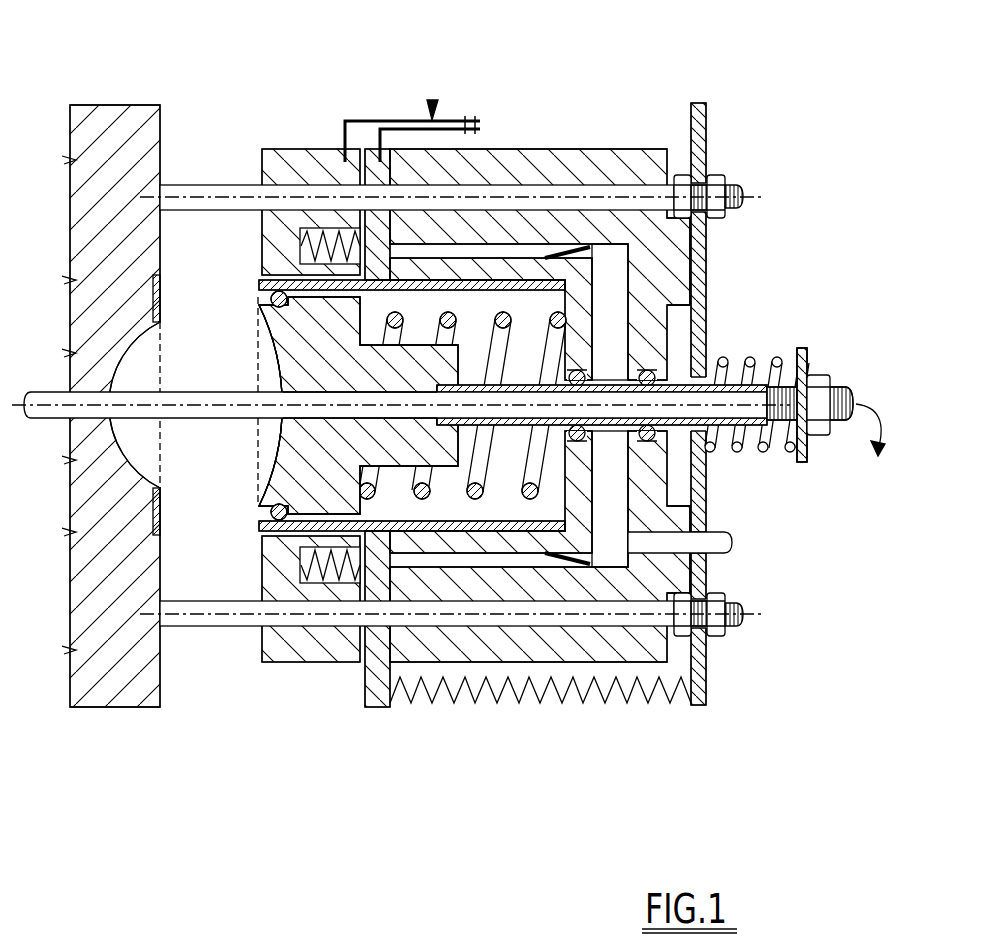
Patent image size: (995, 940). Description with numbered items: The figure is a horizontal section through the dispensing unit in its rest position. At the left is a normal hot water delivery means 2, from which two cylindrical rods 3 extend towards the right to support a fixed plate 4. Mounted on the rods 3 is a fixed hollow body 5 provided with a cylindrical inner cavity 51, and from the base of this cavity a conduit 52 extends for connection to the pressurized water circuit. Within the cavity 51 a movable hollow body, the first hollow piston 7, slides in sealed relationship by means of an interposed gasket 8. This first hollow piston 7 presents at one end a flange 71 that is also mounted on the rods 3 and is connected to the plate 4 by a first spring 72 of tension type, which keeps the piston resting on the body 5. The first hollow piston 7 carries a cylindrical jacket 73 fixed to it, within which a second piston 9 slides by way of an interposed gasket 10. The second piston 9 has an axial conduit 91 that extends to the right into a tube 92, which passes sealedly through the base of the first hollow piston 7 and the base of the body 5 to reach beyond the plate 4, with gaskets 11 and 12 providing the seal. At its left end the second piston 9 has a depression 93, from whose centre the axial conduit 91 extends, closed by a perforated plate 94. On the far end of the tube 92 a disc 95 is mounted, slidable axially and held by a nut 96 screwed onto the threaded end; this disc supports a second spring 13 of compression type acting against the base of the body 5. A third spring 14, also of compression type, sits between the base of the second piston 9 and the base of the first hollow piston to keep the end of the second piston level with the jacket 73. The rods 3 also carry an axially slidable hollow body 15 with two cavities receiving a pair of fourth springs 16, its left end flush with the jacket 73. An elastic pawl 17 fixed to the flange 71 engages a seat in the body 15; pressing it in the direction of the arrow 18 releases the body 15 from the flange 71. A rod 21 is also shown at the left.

The hot water delivery means 2 is at (120, 103).
The cylindrical rods 3 is at (211, 184).
The fixed plate 4 is at (701, 103).
The fixed hollow body 5 is at (648, 152).
The first hollow piston 7 is at (497, 260).
The gasket 8 is at (573, 243).
The second piston 9 is at (283, 334).
The gasket 10 is at (268, 299).
The gasket 11 is at (580, 371).
The gasket 12 is at (650, 371).
The second spring 13 is at (772, 447).
The third spring 14 is at (478, 497).
The hollow body 15 is at (280, 152).
The fourth springs 16 is at (327, 228).
The elastic pawl 17 is at (357, 120).
The arrow 18 is at (433, 100).
The push rod 21 is at (40, 392).
The cylindrical inner cavity 51 is at (613, 257).
The conduit 52 is at (735, 548).
The flange 71 is at (373, 707).
The first spring 72 is at (448, 697).
The cylindrical jacket 73 is at (262, 282).
The axial conduit 91 is at (285, 425).
The tube 92 is at (749, 412).
The depression 93 is at (268, 375).
The perforated plate 94 is at (257, 470).
The disc 95 is at (803, 348).
The nut 96 is at (817, 376).